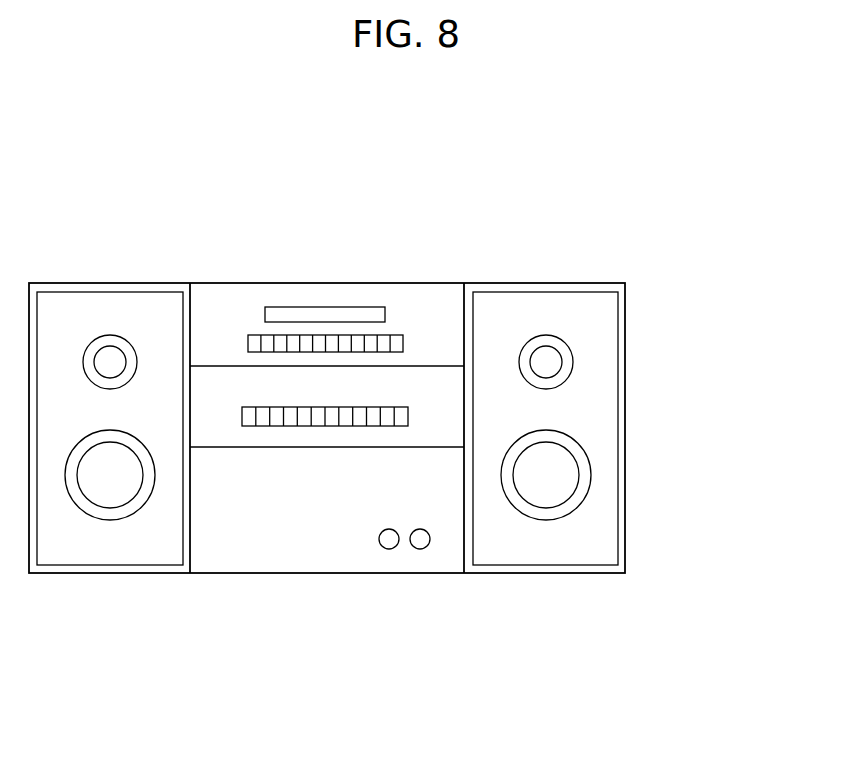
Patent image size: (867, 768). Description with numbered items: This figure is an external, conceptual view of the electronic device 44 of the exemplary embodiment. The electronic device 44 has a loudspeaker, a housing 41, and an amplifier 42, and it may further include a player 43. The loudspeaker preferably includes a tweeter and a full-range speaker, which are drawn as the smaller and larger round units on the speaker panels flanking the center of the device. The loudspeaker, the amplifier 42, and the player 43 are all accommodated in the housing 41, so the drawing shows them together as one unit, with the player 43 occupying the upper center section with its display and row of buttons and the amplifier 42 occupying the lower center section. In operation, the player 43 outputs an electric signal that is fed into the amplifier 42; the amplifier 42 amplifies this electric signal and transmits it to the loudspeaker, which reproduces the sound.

The electronic device 44 is at (677, 230).
The player 43 is at (367, 292).
The amplifier 42 is at (283, 565).
The housing 41 is at (613, 418).